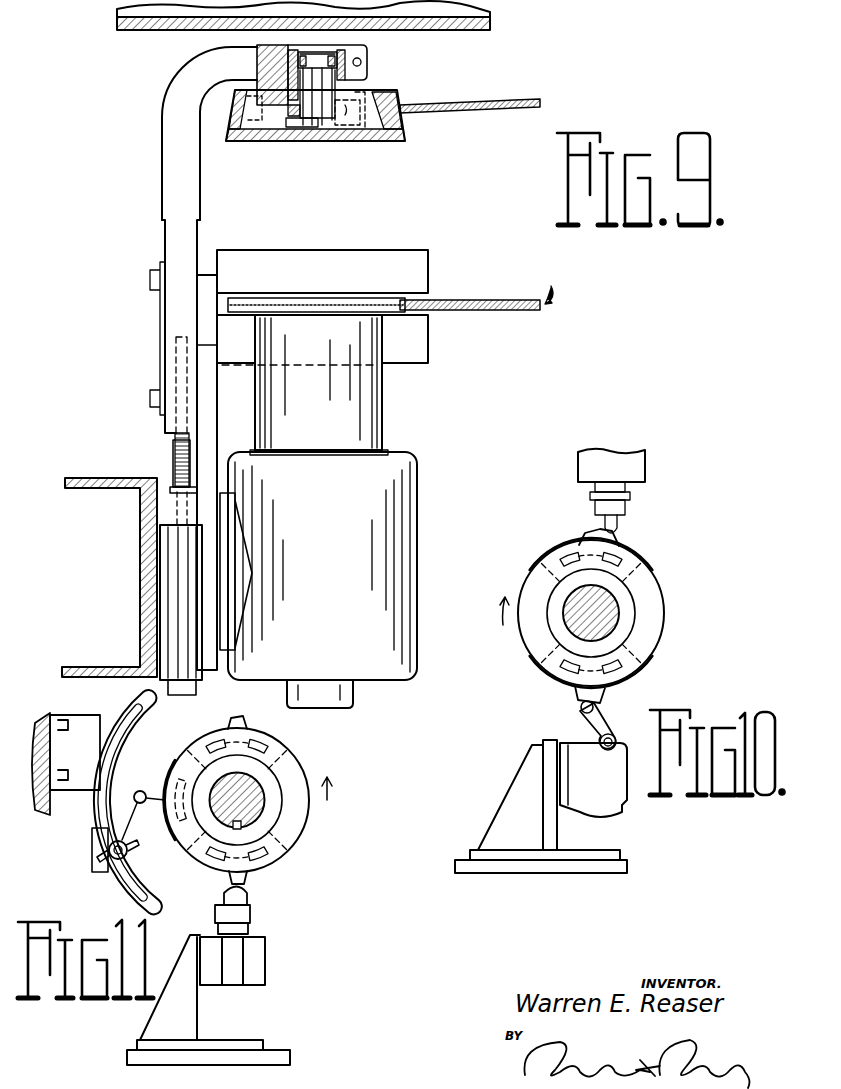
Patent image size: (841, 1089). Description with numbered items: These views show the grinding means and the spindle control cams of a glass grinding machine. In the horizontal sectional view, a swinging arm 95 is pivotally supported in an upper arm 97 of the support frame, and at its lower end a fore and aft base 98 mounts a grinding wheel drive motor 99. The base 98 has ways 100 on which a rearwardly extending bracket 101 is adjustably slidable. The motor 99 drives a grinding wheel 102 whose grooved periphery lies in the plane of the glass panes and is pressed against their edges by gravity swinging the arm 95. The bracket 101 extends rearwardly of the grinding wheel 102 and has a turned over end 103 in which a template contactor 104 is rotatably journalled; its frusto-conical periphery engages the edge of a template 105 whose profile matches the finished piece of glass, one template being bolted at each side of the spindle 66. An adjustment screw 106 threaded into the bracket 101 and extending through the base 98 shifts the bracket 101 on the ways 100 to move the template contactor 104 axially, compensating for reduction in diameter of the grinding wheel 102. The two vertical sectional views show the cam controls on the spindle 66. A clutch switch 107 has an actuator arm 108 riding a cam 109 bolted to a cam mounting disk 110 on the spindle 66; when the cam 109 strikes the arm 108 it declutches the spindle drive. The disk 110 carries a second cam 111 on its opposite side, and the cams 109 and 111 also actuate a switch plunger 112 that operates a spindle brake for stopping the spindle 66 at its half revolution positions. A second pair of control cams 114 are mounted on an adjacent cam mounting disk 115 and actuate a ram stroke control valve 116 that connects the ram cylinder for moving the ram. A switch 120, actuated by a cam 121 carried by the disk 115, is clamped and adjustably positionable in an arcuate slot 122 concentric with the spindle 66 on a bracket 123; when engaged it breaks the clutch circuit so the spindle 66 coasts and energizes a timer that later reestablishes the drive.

In FIG. 9, the swinging arm 95 is at (123, 479).
In FIG. 9, the upper arm 97 is at (443, 31).
In FIG. 9, the fore and aft base 98 is at (218, 440).
In FIG. 9, the grinding wheel drive motor 99 is at (418, 556).
In FIG. 9, the ways 100 is at (175, 455).
In FIG. 9, the bracket 101 is at (163, 240).
In FIG. 9, the grinding wheel 102 is at (404, 316).
In FIG. 9, the turned over end 103 is at (368, 73).
In FIG. 9, the template contactor 104 is at (405, 98).
In FIG. 9, the template 105 is at (465, 114).
In FIG. 9, the adjustment screw 106 is at (174, 466).
In FIG. 10, the clutch switch 107 is at (603, 712).
In FIG. 10, the actuator arm 108 is at (582, 710).
In FIG. 10, the cam 109 is at (648, 676).
In FIG. 10, the cam mounting disk 110 is at (666, 618).
In FIG. 10, the second cam 111 is at (620, 551).
In FIG. 10, the switch plunger 112 is at (614, 527).
In FIG. 11, the control cams 114 is at (249, 724).
In FIG. 11, the cam mounting disk 115 is at (308, 831).
In FIG. 11, the ram stroke control valve 116 is at (251, 919).
In FIG. 11, the switch 120 is at (90, 877).
In FIG. 11, the cam 121 is at (168, 778).
In FIG. 11, the arcuate slot 122 is at (134, 708).
In FIG. 11, the bracket 123 is at (69, 712).
In FIG. 10, the spindle 66 is at (618, 606).
In FIG. 11, the spindle 66 is at (264, 790).